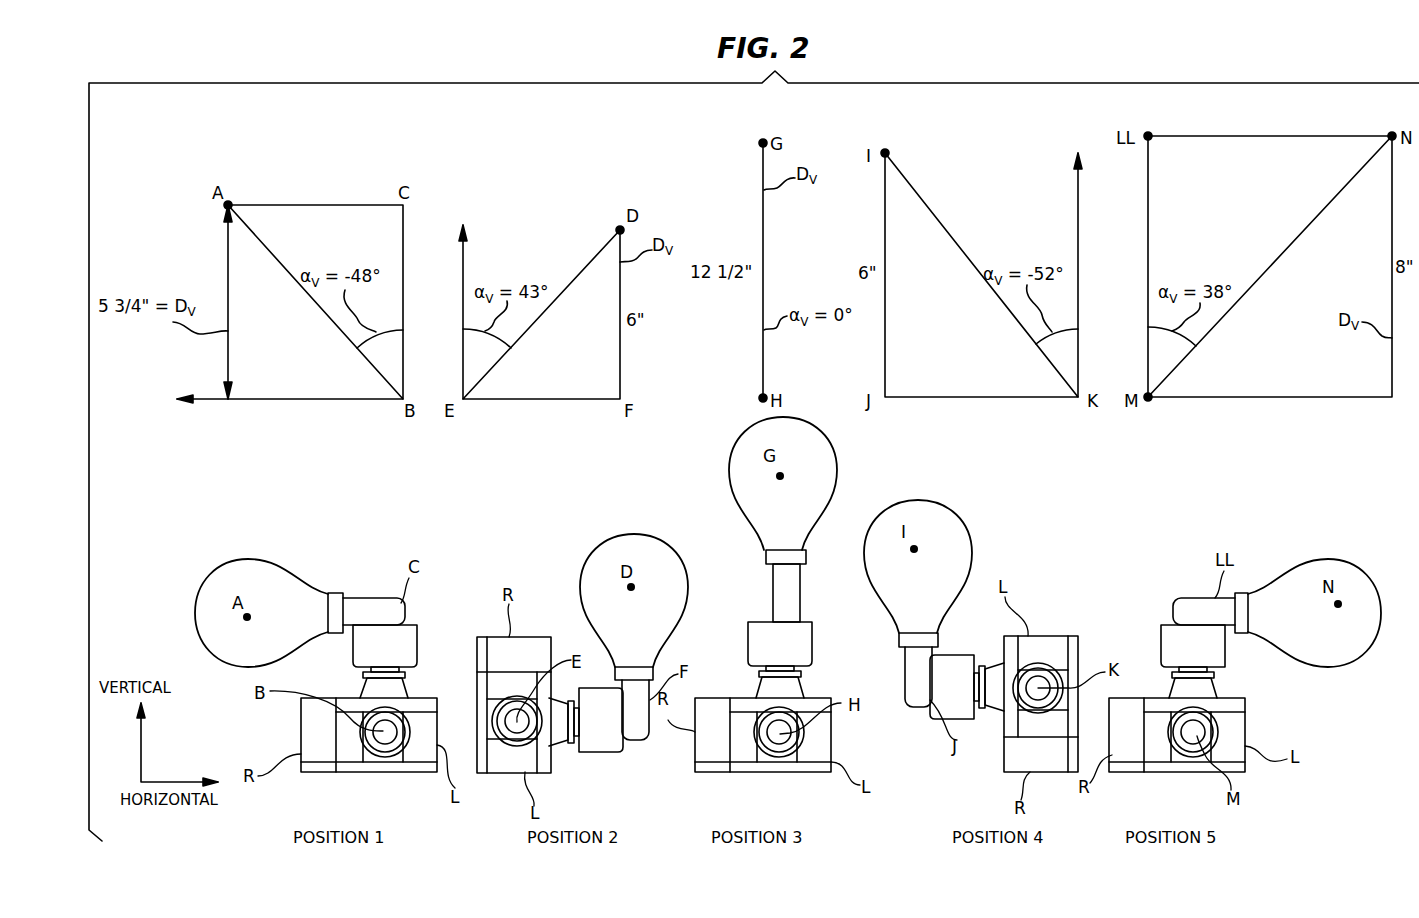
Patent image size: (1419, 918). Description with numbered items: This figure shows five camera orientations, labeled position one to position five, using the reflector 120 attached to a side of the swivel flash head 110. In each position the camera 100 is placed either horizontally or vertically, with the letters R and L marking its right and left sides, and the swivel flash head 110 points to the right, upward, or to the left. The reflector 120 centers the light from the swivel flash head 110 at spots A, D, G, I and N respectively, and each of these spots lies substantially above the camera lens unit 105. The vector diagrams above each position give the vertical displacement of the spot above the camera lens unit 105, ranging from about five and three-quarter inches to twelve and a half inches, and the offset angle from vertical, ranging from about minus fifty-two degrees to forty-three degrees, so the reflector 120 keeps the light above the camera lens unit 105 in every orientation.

The camera 100 is at (318, 735).
The camera lens unit 105 is at (373, 726).
The swivel flash head 110 is at (405, 611).
The reflector 120 is at (208, 590).